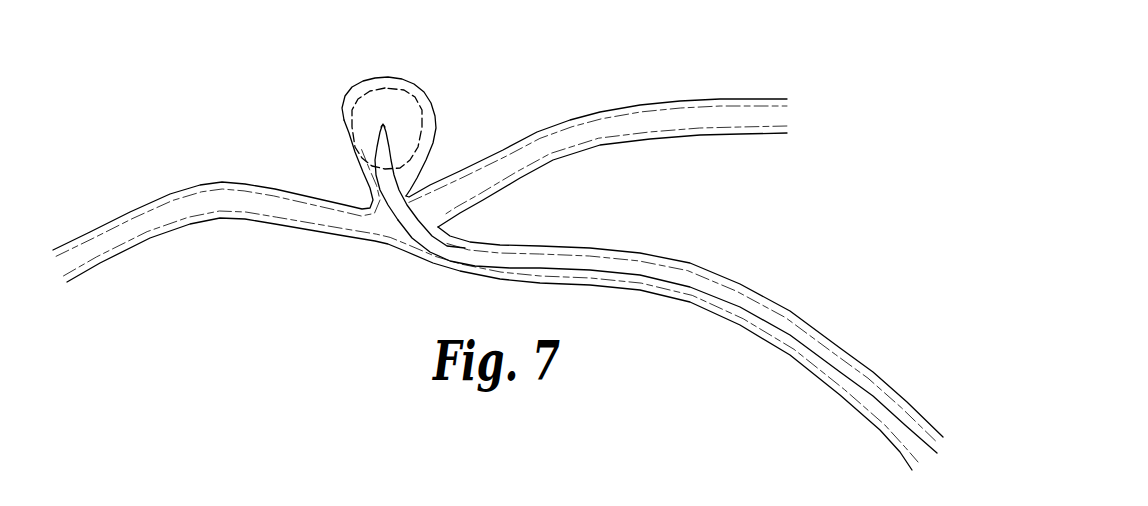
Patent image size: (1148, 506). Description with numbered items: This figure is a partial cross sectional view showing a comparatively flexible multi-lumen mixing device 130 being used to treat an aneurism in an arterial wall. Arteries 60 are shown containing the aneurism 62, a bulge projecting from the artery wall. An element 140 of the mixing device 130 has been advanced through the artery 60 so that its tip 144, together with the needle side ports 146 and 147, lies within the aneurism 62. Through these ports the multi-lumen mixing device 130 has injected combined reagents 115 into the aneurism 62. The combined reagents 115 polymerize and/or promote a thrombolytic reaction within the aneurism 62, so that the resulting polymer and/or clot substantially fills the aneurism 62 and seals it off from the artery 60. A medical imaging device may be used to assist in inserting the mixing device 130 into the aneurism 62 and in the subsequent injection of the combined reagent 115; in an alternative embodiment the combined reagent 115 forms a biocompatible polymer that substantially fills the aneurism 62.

The artery 60 is at (617, 106).
The aneurism 62 is at (418, 78).
The combined reagents 115 is at (430, 110).
The multi-lumen mixing device 130 is at (384, 296).
The element 140 is at (767, 320).
The tip 144 is at (382, 124).
The needle side port 146 is at (375, 146).
The needle side port 147 is at (390, 140).